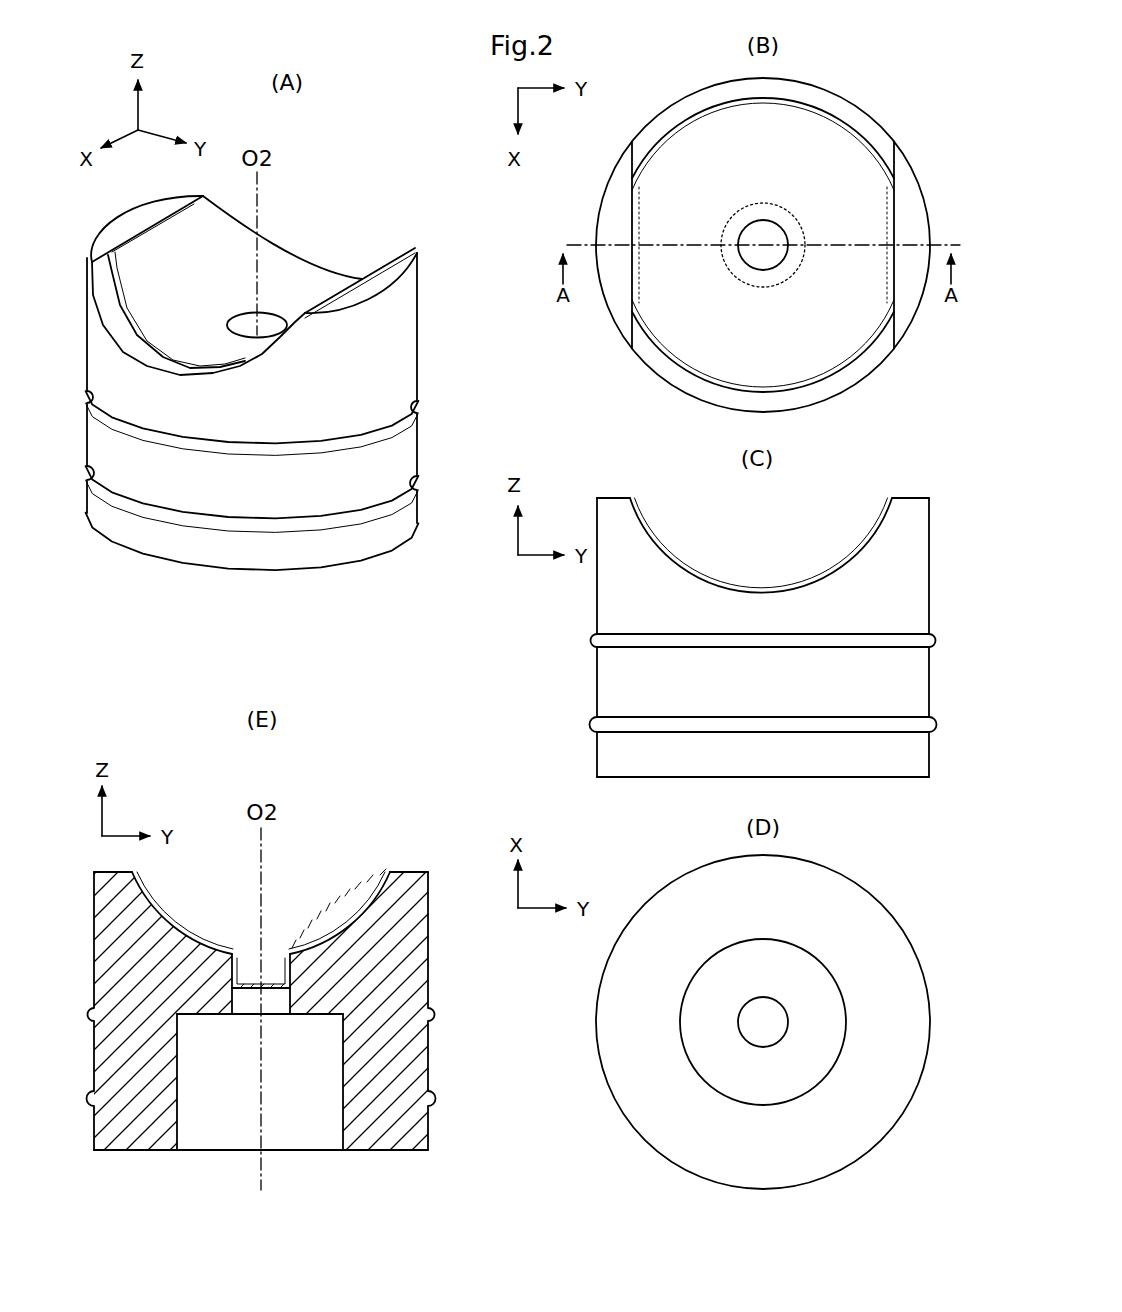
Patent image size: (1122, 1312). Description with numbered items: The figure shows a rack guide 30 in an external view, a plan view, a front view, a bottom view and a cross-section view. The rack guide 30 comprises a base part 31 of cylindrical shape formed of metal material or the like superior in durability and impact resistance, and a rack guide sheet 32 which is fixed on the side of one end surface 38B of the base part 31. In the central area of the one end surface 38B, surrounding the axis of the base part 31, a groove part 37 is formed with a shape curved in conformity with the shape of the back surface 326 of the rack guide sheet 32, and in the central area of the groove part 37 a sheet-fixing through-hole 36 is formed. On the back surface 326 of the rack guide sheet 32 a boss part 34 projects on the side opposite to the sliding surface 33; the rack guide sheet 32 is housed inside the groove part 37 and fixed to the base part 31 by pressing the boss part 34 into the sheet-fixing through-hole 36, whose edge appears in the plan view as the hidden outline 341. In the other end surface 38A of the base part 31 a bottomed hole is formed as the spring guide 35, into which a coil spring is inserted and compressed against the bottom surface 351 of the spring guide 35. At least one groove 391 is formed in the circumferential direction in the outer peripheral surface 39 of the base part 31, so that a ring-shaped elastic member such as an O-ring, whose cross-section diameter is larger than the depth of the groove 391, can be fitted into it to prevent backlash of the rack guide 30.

The rack guide 30 is at (385, 194).
The base part 31 is at (421, 318).
The rack guide sheet 32 is at (272, 262).
The sliding surface 33 is at (172, 284).
The boss part 34 is at (236, 962).
The spring guide 35 is at (818, 988).
The sheet-fixing through-hole 36 is at (264, 324).
The groove part 37 is at (346, 241).
The other end surface 38A is at (624, 779).
The one end surface 38B is at (409, 267).
The outer peripheral surface 39 is at (413, 378).
The groove 391 is at (413, 418).
The counterbore edge 341 is at (740, 224).
The back surface 326 is at (318, 942).
The bottom surface 351 is at (222, 1016).